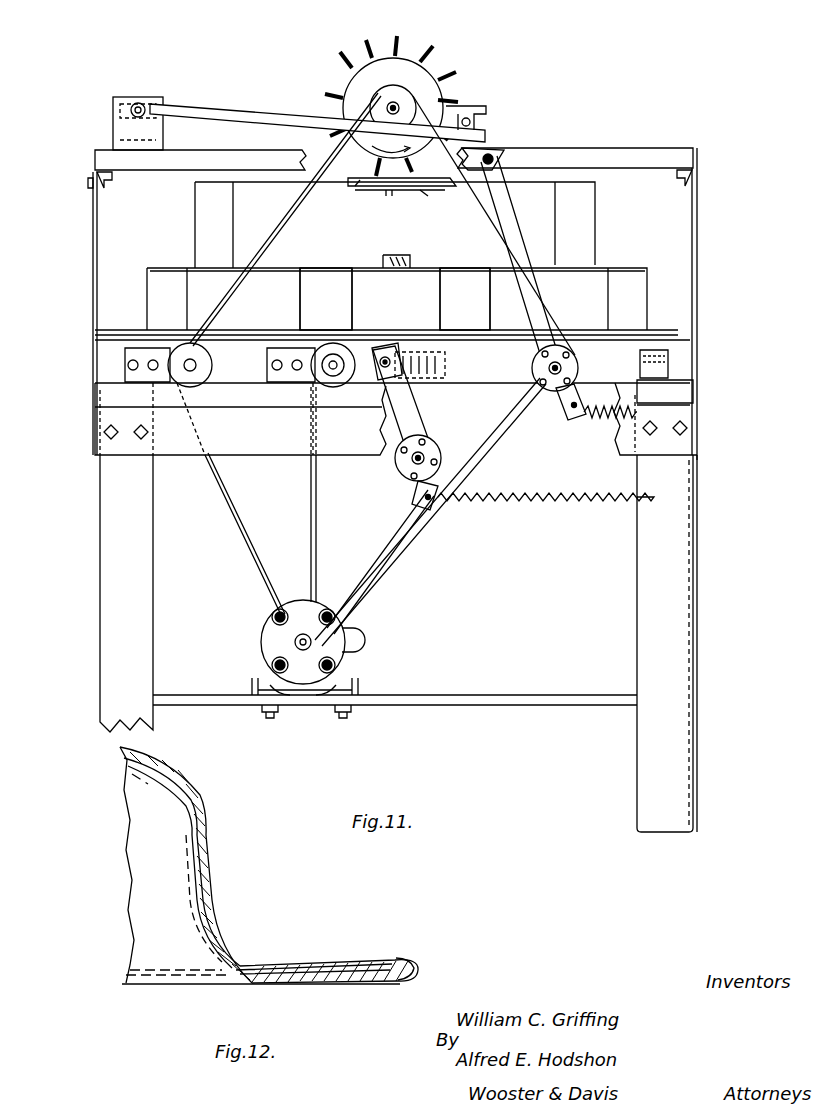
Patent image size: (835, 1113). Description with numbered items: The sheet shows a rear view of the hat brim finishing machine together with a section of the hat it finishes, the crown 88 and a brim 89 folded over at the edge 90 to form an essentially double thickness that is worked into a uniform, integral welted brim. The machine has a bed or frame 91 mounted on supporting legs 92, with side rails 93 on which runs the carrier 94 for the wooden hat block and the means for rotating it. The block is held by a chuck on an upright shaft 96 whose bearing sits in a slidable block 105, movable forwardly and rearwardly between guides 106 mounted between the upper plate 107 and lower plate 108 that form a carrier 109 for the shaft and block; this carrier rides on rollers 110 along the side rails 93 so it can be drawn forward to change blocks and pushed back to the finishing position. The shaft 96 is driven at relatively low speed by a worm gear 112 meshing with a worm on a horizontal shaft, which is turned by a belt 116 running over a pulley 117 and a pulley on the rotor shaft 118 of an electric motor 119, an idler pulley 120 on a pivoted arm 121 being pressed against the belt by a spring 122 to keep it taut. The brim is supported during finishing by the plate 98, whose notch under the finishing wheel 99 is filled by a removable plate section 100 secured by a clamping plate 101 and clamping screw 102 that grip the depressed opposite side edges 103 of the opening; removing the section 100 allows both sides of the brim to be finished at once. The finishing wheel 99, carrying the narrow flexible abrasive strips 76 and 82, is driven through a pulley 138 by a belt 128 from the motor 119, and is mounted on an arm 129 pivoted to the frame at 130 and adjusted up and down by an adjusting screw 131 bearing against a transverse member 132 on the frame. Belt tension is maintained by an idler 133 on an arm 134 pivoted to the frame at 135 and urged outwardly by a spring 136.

In FIG. 11, the teeth 76 is at (382, 36).
In FIG. 11, the tooth 82 is at (444, 74).
In FIG. 12, the crown 88 is at (212, 878).
In FIG. 12, the brim 89 is at (346, 984).
In FIG. 12, the edge 90 is at (404, 960).
In FIG. 11, the bed or frame 91 is at (170, 460).
In FIG. 11, the supporting legs 92 is at (100, 570).
In FIG. 11, the side rails 93 is at (108, 402).
In FIG. 11, the carrier 94 is at (89, 376).
In FIG. 11, the upright shaft 96 is at (412, 256).
In FIG. 11, the plate 98 is at (258, 192).
In FIG. 11, the finishing wheel 99 is at (421, 96).
In FIG. 11, the removable plate section 100 is at (406, 196).
In FIG. 11, the clamping plate 101 is at (356, 192).
In FIG. 11, the clamping screw 102 is at (388, 198).
In FIG. 11, the depressed opposite side edges 103 is at (440, 196).
In FIG. 11, the slidable block 105 is at (412, 278).
In FIG. 11, the guides 106 is at (494, 314).
In FIG. 11, the upper plate 107 is at (292, 266).
In FIG. 11, the lower plate 108 is at (230, 328).
In FIG. 11, the carrier 109 is at (166, 264).
In FIG. 11, the rollers 110 is at (652, 372).
In FIG. 11, the worm gear 112 is at (440, 364).
In FIG. 11, the belt 116 is at (308, 522).
In FIG. 11, the pulley 117 is at (340, 396).
In FIG. 11, the rotor shaft 118 is at (300, 650).
In FIG. 11, the electric motor 119 is at (287, 647).
In FIG. 11, the idler pulley 120 is at (438, 448).
In FIG. 11, the pivoted arm 121 is at (408, 410).
In FIG. 11, the spring 122 is at (530, 510).
In FIG. 11, the belt 128 is at (278, 224).
In FIG. 11, the arm 129 is at (250, 116).
In FIG. 11, the pivot 130 is at (142, 104).
In FIG. 11, the adjusting screw 131 is at (478, 128).
In FIG. 11, the transverse member 132 is at (560, 150).
In FIG. 11, the idler 133 is at (548, 392).
In FIG. 11, the arm 134 is at (508, 216).
In FIG. 11, the pivot 135 is at (500, 152).
In FIG. 11, the spring 136 is at (588, 420).
In FIG. 11, the pulley 138 is at (396, 96).